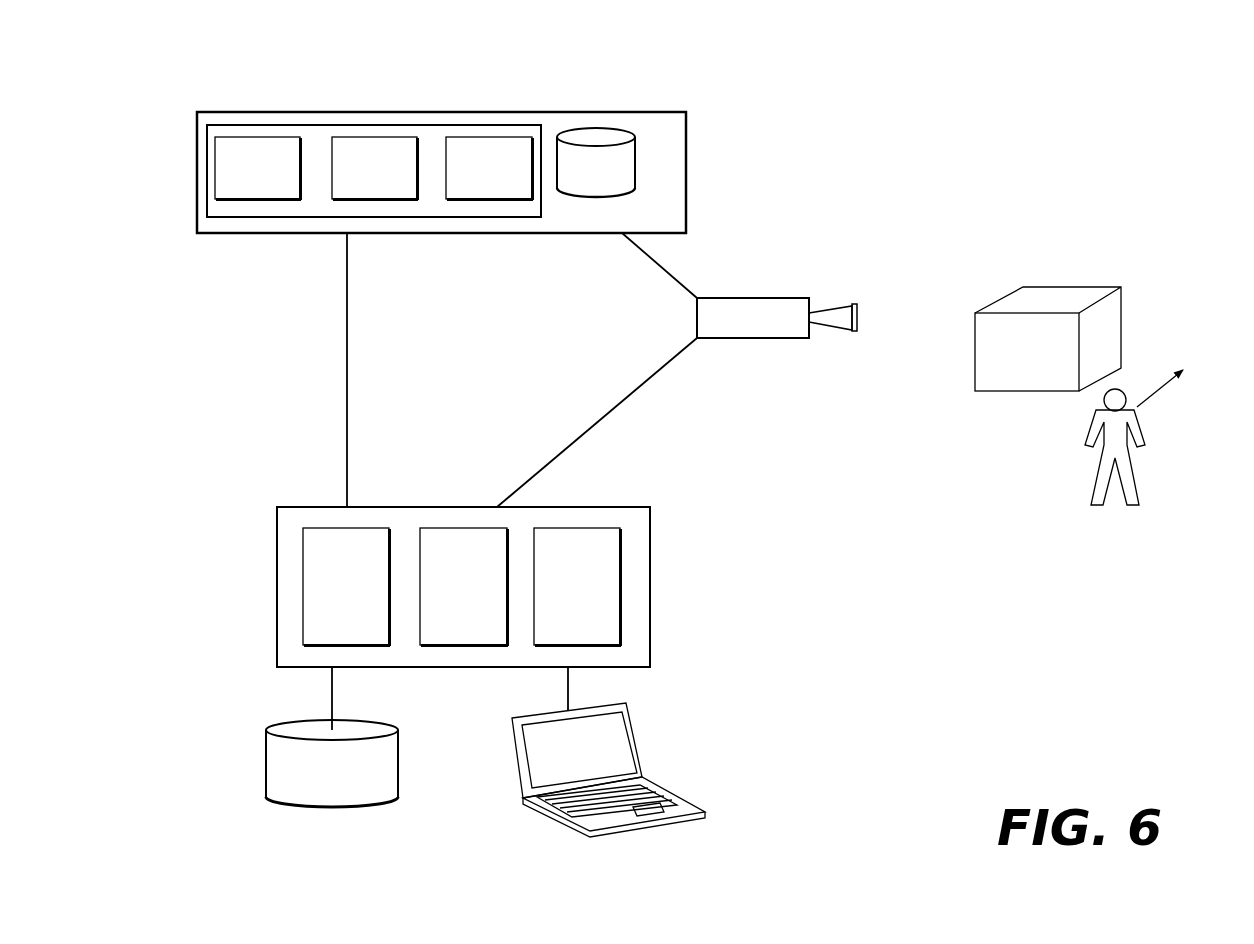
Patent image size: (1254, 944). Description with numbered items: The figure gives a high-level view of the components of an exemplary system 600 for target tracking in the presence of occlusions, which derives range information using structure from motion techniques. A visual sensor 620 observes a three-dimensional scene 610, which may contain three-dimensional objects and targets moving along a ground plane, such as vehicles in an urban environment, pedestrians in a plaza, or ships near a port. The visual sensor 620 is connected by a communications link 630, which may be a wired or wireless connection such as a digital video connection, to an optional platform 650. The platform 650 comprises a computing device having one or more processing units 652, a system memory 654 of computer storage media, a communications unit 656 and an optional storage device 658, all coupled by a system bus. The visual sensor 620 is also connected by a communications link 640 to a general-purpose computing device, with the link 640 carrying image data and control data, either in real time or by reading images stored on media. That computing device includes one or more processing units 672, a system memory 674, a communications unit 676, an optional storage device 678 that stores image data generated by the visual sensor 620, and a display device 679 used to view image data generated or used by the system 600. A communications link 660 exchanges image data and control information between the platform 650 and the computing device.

The system 600 is at (937, 84).
The three-dimensional scene 610 is at (1035, 233).
The visual sensor 620 is at (763, 298).
The communications link 630 is at (628, 246).
The communications link 640 is at (610, 408).
The platform 650 is at (686, 165).
The processing unit 652 is at (257, 199).
The system memory 654 is at (396, 199).
The communications unit 656 is at (510, 199).
The storage device 658 is at (600, 135).
The communications link 660 is at (347, 366).
The processing unit 672 is at (327, 636).
The system memory 674 is at (444, 636).
The communications unit 676 is at (558, 636).
The storage device 678 is at (266, 785).
The display device 679 is at (705, 812).